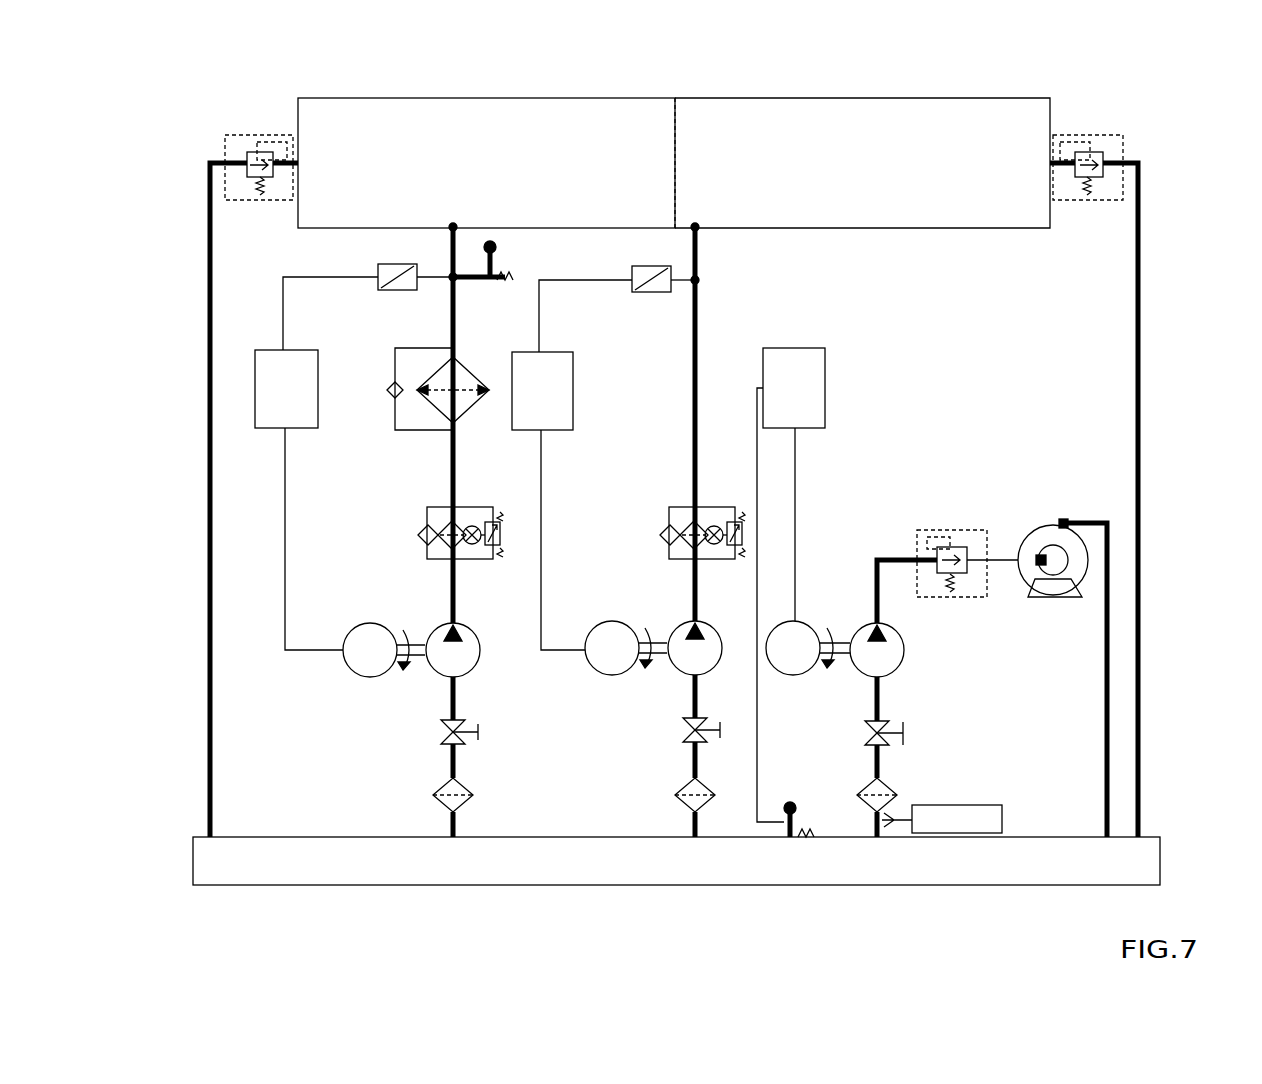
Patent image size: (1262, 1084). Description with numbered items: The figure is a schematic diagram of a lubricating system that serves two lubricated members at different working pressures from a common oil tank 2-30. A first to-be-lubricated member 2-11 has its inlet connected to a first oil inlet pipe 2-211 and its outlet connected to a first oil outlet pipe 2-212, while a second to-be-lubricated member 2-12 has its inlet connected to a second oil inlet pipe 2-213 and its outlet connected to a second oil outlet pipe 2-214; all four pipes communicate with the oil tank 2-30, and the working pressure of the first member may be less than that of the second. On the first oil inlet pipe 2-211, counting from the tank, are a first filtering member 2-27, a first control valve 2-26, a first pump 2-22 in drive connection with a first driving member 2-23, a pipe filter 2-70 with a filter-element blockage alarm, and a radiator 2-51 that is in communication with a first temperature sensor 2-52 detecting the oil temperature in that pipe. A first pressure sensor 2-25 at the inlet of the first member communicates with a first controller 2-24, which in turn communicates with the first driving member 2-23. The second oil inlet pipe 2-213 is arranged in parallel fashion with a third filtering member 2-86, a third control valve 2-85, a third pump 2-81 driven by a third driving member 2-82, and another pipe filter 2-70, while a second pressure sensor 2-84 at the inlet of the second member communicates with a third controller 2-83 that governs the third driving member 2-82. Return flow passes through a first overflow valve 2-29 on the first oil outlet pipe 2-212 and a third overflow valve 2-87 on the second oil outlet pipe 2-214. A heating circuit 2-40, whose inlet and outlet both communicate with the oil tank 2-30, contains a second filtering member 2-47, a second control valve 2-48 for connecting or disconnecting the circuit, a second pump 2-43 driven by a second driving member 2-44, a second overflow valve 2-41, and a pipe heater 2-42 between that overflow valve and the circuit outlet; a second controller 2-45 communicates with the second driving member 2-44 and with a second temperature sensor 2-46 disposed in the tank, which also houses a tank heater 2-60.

The first to-be-lubricated member 2-11 is at (437, 115).
The second to-be-lubricated member 2-12 is at (868, 117).
The first oil inlet pipe 2-211 is at (449, 226).
The first oil outlet pipe 2-212 is at (212, 680).
The second oil inlet pipe 2-213 is at (690, 225).
The second oil outlet pipe 2-214 is at (1145, 342).
The first overflow valve 2-29 is at (238, 133).
The third overflow valve 2-87 is at (1112, 136).
The first pressure sensor 2-25 is at (376, 273).
The first temperature sensor 2-52 is at (498, 254).
The second pressure sensor 2-84 is at (672, 274).
The radiator 2-51 is at (456, 368).
The first controller 2-24 is at (276, 430).
The third controller 2-83 is at (553, 387).
The second controller 2-45 is at (815, 350).
The pipe filter 2-70 is at (428, 508).
The first driving member 2-23 is at (370, 677).
The first pump 2-22 is at (474, 664).
The first control valve 2-26 is at (462, 735).
The first filtering member 2-27 is at (444, 808).
The third driving member 2-82 is at (610, 675).
The third pump 2-81 is at (680, 676).
The third control valve 2-85 is at (705, 765).
The third filtering member 2-86 is at (688, 808).
The second driving member 2-44 is at (800, 675).
The second pump 2-43 is at (905, 652).
The second control valve 2-48 is at (903, 745).
The second filtering member 2-47 is at (885, 808).
The second temperature sensor 2-46 is at (786, 840).
The tank heater 2-60 is at (973, 825).
The second overflow valve 2-41 is at (965, 530).
The pipe heater 2-42 is at (1050, 525).
The heating circuit 2-40 is at (1110, 633).
The oil tank 2-30 is at (258, 840).